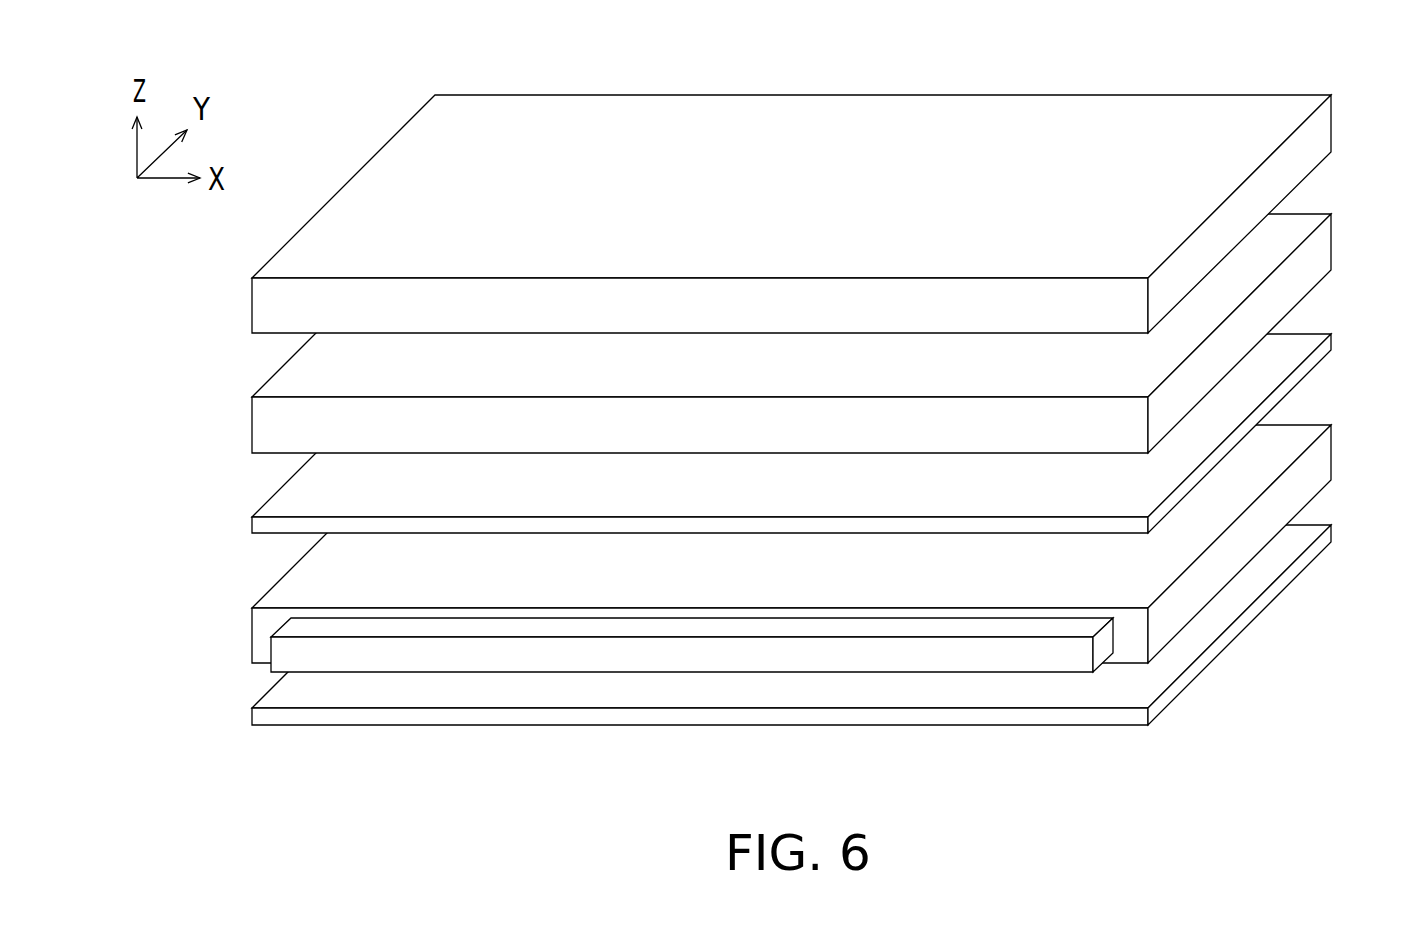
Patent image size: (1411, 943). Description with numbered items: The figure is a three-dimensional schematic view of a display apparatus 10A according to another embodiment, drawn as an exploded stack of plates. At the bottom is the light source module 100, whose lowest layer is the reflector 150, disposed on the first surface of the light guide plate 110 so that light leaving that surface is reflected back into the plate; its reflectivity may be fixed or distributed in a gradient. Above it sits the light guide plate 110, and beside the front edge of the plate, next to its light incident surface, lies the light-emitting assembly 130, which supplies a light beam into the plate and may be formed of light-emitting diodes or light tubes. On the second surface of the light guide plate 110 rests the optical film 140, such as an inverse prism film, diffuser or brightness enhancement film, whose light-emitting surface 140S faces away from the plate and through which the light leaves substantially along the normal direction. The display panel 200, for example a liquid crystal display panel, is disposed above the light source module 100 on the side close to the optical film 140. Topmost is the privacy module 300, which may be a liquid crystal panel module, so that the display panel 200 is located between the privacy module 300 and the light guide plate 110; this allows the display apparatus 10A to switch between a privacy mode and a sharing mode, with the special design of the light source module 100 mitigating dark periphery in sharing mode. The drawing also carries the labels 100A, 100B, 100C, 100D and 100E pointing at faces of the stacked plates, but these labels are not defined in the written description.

The display apparatus 10A is at (1405, 790).
The light source module 100 is at (748, 540).
The bottom surface of backlight module 100A is at (1125, 663).
The top surface of light guide plate 100B is at (1110, 572).
The top surface region of optical film 100C is at (280, 581).
The top surface of reflective sheet 100D is at (1232, 550).
The side surface of light guide plate 100E is at (239, 665).
The light guide plate 110 is at (1322, 463).
The light-emitting assembly 130 is at (760, 655).
The optical film 140 is at (1328, 347).
The light-emitting surface 140S is at (1283, 357).
The reflector 150 is at (1330, 538).
The display panel 200 is at (1325, 250).
The privacy module 300 is at (1325, 129).